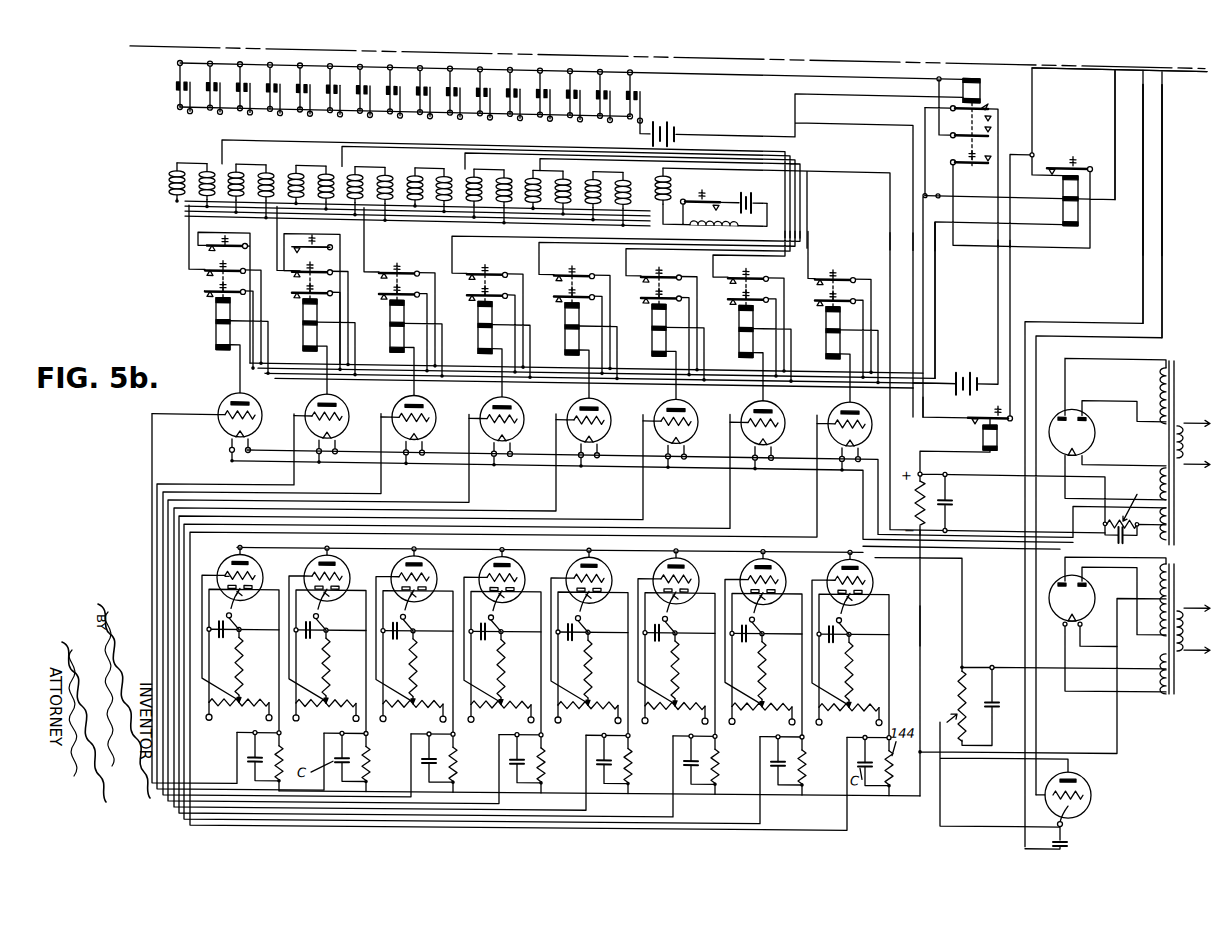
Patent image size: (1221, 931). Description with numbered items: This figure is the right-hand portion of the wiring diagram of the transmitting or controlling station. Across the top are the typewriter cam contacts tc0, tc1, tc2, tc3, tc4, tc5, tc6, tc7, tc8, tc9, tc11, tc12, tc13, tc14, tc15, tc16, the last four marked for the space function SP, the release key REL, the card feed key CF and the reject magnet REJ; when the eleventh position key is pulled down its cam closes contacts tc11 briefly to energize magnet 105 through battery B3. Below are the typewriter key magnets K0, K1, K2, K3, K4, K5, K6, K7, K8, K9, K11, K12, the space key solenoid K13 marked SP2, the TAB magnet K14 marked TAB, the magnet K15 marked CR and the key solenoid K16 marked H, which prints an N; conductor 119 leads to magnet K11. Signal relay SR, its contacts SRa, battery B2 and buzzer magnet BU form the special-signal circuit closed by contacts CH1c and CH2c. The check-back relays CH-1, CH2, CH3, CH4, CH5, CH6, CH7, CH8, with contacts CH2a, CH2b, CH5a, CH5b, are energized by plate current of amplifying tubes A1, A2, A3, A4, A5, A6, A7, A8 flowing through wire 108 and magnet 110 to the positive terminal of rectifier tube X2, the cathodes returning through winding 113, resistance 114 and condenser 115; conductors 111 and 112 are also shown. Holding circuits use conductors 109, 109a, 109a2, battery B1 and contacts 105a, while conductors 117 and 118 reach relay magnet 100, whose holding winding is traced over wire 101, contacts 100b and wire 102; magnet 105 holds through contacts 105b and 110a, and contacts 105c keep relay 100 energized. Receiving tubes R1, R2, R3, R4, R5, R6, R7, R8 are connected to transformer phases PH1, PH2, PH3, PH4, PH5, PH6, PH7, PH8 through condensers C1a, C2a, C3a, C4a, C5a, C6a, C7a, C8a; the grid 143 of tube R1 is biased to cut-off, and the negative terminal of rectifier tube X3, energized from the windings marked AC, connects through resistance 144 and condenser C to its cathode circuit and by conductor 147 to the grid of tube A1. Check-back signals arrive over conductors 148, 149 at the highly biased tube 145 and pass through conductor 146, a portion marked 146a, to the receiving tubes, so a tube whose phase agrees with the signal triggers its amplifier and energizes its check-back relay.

The terminal contact tc0 is at (249, 107).
The terminal contact tc1 is at (279, 107).
The terminal contact tc2 is at (309, 107).
The terminal contact tc3 is at (339, 107).
The terminal contact tc4 is at (369, 107).
The terminal contact tc5 is at (399, 107).
The terminal contact tc6 is at (429, 107).
The terminal contact tc7 is at (459, 107).
The terminal contact tc8 is at (489, 107).
The terminal contact tc9 is at (519, 107).
The typewriter cam contacts tc11 is at (219, 107).
The terminal contact tc12 is at (175, 92).
The space terminal contact tc13 is at (534, 101).
The release terminal contact tc14 is at (564, 101).
The carriage feed terminal contact tc15 is at (594, 102).
The reject terminal contact tc16 is at (624, 102).
The space magnet SP is at (543, 118).
The release key REL is at (573, 118).
The card feed key CF is at (603, 118).
The reject magnet REJ is at (633, 118).
The battery B3 is at (690, 118).
The relay coil K0 is at (233, 180).
The relay coil K1 is at (263, 184).
The relay coil K2 is at (293, 176).
The relay coil K3 is at (323, 180).
The relay coil K4 is at (352, 182).
The relay coil K5 is at (382, 186).
The relay coil K6 is at (412, 179).
The relay coil K7 is at (441, 182).
The relay coil K8 is at (471, 185).
The relay coil K9 is at (501, 189).
The typewriter key magnet K11 is at (202, 177).
The relay coil K12 is at (177, 169).
The typewriter space key solenoid K13 is at (514, 207).
The TAB magnet K14 is at (545, 208).
The carriage return relay coil K15 is at (588, 203).
The typewriter key solenoid K16 is at (626, 204).
The space relay SP2 is at (533, 186).
The TAB magnet TAB is at (563, 187).
The carriage return relay CR is at (593, 188).
The relay H is at (623, 188).
The signal relay magnet SR is at (672, 175).
The signal relay contacts SRa is at (704, 182).
The battery B2 is at (750, 180).
The buzzer magnet BU is at (735, 213).
The conductor 119 is at (742, 147).
The check-back relay CH-1 is at (216, 316).
The check-back relay contacts CH1c is at (227, 233).
The check-back relay CH2 is at (301, 306).
The check-back relay contacts CH2a is at (309, 306).
The check-back relay contacts CH2b is at (311, 265).
The check-back relay contacts CH2c is at (311, 236).
The channel relay CH3 is at (393, 316).
The channel relay CH4 is at (481, 316).
The check-back relay CH5 is at (565, 298).
The check-back relay contacts CH5a is at (566, 298).
The check-back relay contacts CH5b is at (574, 264).
The channel relay CH6 is at (655, 316).
The channel relay CH7 is at (742, 316).
The check-back magnet CH8 is at (829, 316).
The amplifying tube A1 is at (252, 408).
The amplifying tube A2 is at (339, 408).
The thyratron tube A3 is at (426, 408).
The thyratron tube A4 is at (514, 408).
The amplifying tube A5 is at (601, 408).
The thyratron tube A6 is at (688, 408).
The thyratron tube A7 is at (775, 408).
The amplifying tube A8 is at (862, 408).
The receiving tube R1 is at (245, 554).
The receiving tube R2 is at (332, 554).
The receiving tube R3 is at (419, 554).
The receiving tube R4 is at (507, 554).
The receiving tube R5 is at (594, 554).
The receiving tube R6 is at (681, 554).
The receiving tube R7 is at (768, 554).
The receiving tube R8 is at (855, 554).
The capacitor C1a is at (219, 626).
The capacitor C2a is at (306, 626).
The capacitor C3a is at (393, 626).
The capacitor C4a is at (481, 626).
The capacitor C5a is at (568, 626).
The capacitor C6a is at (655, 626).
The capacitor C7a is at (742, 626).
The capacitor C8a is at (829, 626).
The transformer phase PH1 is at (239, 713).
The photocell PH2 is at (326, 713).
The photocell PH3 is at (413, 714).
The photocell PH4 is at (501, 715).
The photocell PH5 is at (588, 716).
The photocell PH6 is at (675, 716).
The photocell PH7 is at (762, 717).
The photocell PH8 is at (849, 718).
The condenser C is at (246, 760).
The grid 143 is at (250, 575).
The resistance 144 is at (284, 760).
The conductor 146 is at (958, 750).
The conductor 146a is at (921, 618).
The high biased tube 145 is at (1092, 787).
The conductor 147 is at (150, 469).
The conductor 111 is at (604, 464).
The conductor 112 is at (614, 458).
The wire 108 is at (906, 414).
The conductor 109 is at (924, 400).
The conductor 109a is at (921, 118).
The conductor 109a2 is at (924, 330).
The relay magnet 110 is at (982, 427).
The relay contacts 110a is at (975, 398).
The battery B1 is at (962, 372).
The conductor 117 is at (938, 178).
The conductor 118 is at (936, 290).
The magnet 105 is at (981, 72).
The relay contacts 105a is at (1000, 87).
The relay contacts 105b is at (952, 123).
The relay contacts 105c is at (972, 152).
The wire 102 is at (1036, 61).
The wire 101 is at (1108, 80).
The relay 100 is at (1079, 181).
The relay contacts 100b is at (1062, 146).
The conductor 148 is at (1142, 249).
The conductor 149 is at (1161, 275).
The rectifier tube X2 is at (1064, 407).
The rectifier tube X3 is at (1087, 606).
The winding 113 is at (1176, 503).
The resistance 114 is at (1136, 489).
The condenser 115 is at (1123, 525).
The AC supply AC is at (1198, 443).